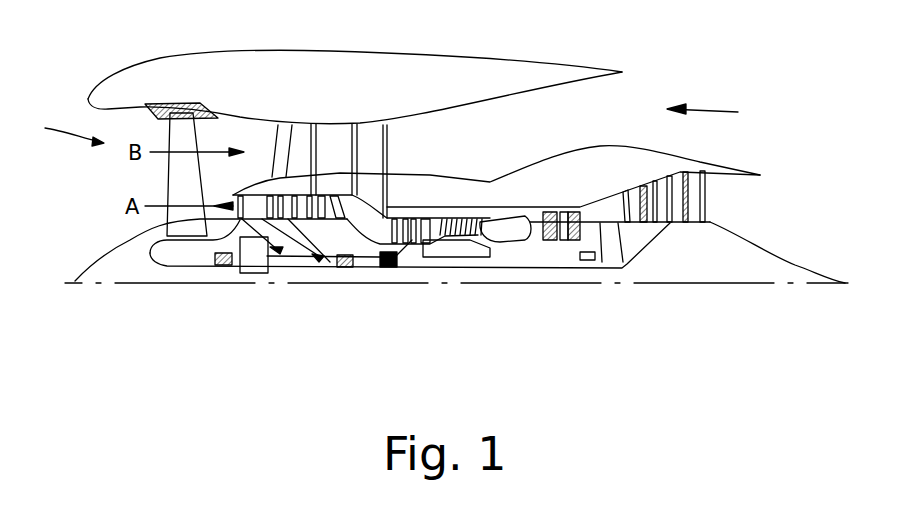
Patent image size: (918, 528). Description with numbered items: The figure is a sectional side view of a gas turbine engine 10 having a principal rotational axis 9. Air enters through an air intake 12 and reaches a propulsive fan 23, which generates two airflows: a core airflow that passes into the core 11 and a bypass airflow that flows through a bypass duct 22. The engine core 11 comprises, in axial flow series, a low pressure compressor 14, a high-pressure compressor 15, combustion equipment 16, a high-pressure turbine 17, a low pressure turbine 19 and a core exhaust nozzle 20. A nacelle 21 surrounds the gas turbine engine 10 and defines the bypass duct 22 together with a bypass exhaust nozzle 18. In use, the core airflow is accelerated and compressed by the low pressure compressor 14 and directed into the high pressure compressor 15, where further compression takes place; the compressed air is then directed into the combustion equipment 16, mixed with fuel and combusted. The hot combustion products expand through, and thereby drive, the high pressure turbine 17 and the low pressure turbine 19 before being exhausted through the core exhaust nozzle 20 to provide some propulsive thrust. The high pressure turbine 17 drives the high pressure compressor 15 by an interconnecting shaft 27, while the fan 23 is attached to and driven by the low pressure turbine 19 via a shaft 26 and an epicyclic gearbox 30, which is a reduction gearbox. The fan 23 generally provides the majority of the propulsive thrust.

The principal rotational axis 9 is at (672, 283).
The gas turbine engine 10 is at (142, 63).
The core 11 is at (491, 184).
The air intake 12 is at (62, 132).
The low pressure compressor 14 is at (310, 124).
The high-pressure compressor 15 is at (438, 209).
The combustion equipment 16 is at (516, 228).
The high-pressure turbine 17 is at (562, 208).
The bypass exhaust nozzle 18 is at (719, 111).
The low pressure turbine 19 is at (679, 190).
The core exhaust nozzle 20 is at (740, 207).
The nacelle 21 is at (374, 68).
The bypass duct 22 is at (600, 122).
The propulsive fan 23 is at (164, 178).
The shaft 26 is at (468, 262).
The interconnecting shaft 27 is at (463, 262).
The epicyclic gearbox 30 is at (255, 258).